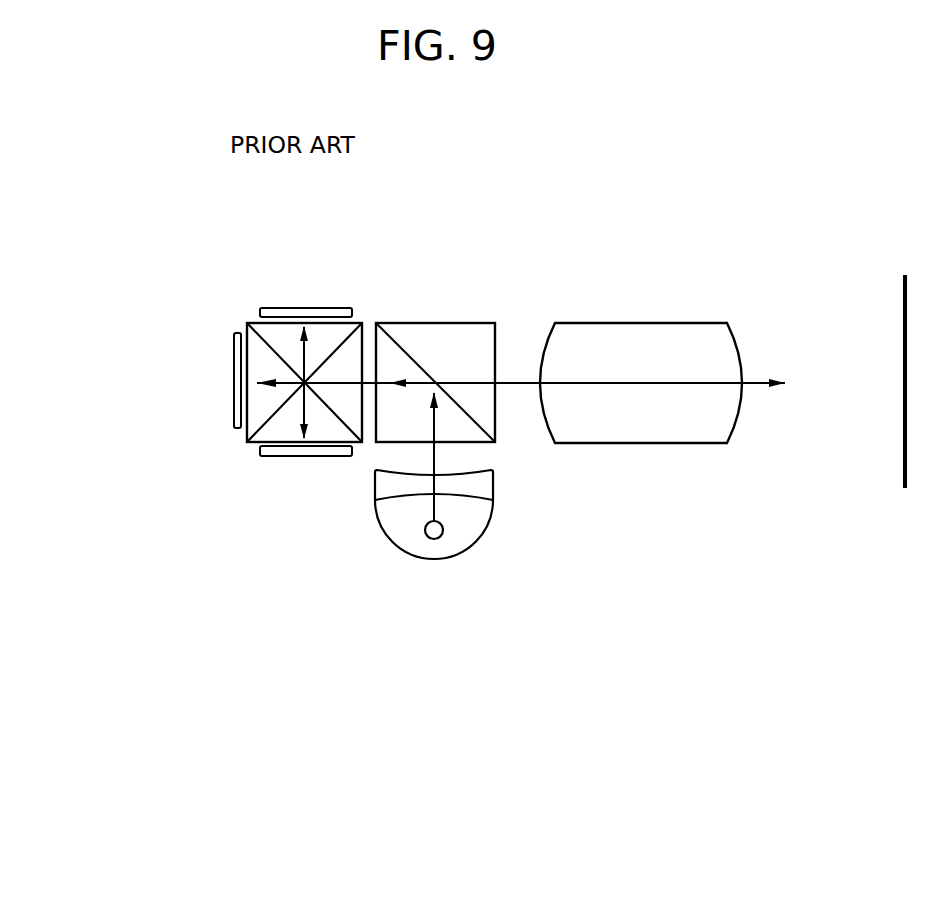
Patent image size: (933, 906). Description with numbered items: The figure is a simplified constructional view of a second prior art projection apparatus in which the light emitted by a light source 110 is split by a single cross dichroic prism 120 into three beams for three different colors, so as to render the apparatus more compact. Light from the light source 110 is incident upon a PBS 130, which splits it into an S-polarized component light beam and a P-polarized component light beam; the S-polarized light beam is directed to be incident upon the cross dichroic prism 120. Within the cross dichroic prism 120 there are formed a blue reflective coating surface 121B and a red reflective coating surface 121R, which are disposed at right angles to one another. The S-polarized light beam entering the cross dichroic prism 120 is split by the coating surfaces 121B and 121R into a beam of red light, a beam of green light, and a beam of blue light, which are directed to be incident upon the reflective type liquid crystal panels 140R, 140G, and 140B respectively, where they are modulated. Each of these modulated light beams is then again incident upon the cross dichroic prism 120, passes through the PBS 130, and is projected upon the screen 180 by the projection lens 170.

The light source 110 is at (467, 542).
The cross dichroic prism 120 is at (262, 325).
The blue reflective coating surface 121B is at (257, 442).
The red reflective coating surface 121R is at (340, 420).
The PBS 130 is at (428, 325).
The reflective type liquid crystal panel 140R is at (339, 307).
The reflective type liquid crystal panel 140G is at (233, 410).
The reflective type liquid crystal panel 140B is at (299, 458).
The projection lens 170 is at (672, 430).
The screen 180 is at (903, 472).